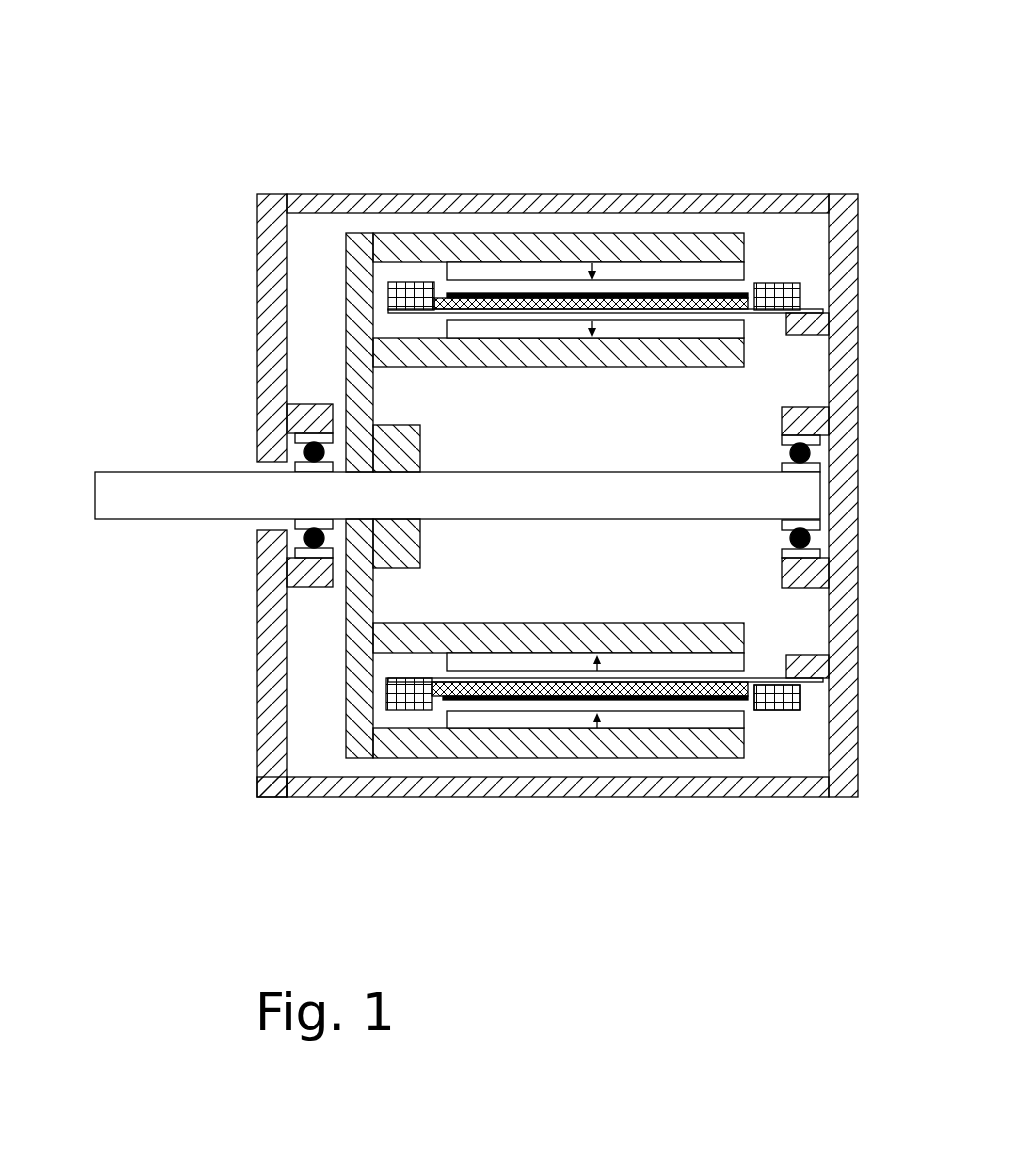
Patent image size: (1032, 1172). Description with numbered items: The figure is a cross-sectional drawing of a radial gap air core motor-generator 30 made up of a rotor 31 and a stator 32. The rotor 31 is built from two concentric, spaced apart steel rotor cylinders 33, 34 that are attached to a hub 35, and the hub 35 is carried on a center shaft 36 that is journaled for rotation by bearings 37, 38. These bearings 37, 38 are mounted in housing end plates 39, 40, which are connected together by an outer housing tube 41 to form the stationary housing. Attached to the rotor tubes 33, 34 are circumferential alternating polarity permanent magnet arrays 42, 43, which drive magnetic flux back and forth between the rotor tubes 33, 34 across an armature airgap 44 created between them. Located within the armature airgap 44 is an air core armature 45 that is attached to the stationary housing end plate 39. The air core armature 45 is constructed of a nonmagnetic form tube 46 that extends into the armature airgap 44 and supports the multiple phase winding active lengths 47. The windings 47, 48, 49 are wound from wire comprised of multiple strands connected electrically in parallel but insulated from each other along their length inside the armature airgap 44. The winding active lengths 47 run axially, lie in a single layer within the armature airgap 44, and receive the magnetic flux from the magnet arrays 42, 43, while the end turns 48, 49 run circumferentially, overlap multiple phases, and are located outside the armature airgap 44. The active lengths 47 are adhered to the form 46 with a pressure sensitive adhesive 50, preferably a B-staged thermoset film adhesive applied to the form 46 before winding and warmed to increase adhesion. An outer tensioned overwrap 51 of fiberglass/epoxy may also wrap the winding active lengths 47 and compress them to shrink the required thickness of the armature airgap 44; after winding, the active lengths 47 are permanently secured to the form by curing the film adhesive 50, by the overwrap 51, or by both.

The air core motor-generator 30 is at (238, 52).
The rotor 31 is at (306, 288).
The stator 32 is at (246, 340).
The rotor cylinder 33 is at (405, 250).
The rotor cylinder 34 is at (402, 358).
The hub 35 is at (338, 642).
The center shaft 36 is at (95, 490).
The bearing 37 is at (808, 455).
The bearing 38 is at (304, 540).
The housing end plate 39 is at (842, 797).
The housing end plate 40 is at (270, 797).
The outer housing tube 41 is at (462, 797).
The permanent magnet array 42 is at (492, 275).
The permanent magnet array 43 is at (483, 330).
The armature airgap 44 is at (760, 276).
The air core armature 45 is at (814, 708).
The nonmagnetic form tube 46 is at (815, 312).
The winding active lengths 47 is at (675, 302).
The end turn 48 is at (407, 693).
The end turn 49 is at (770, 695).
The pressure sensitive adhesive 50 is at (652, 680).
The outer tensioned overwrap 51 is at (676, 702).